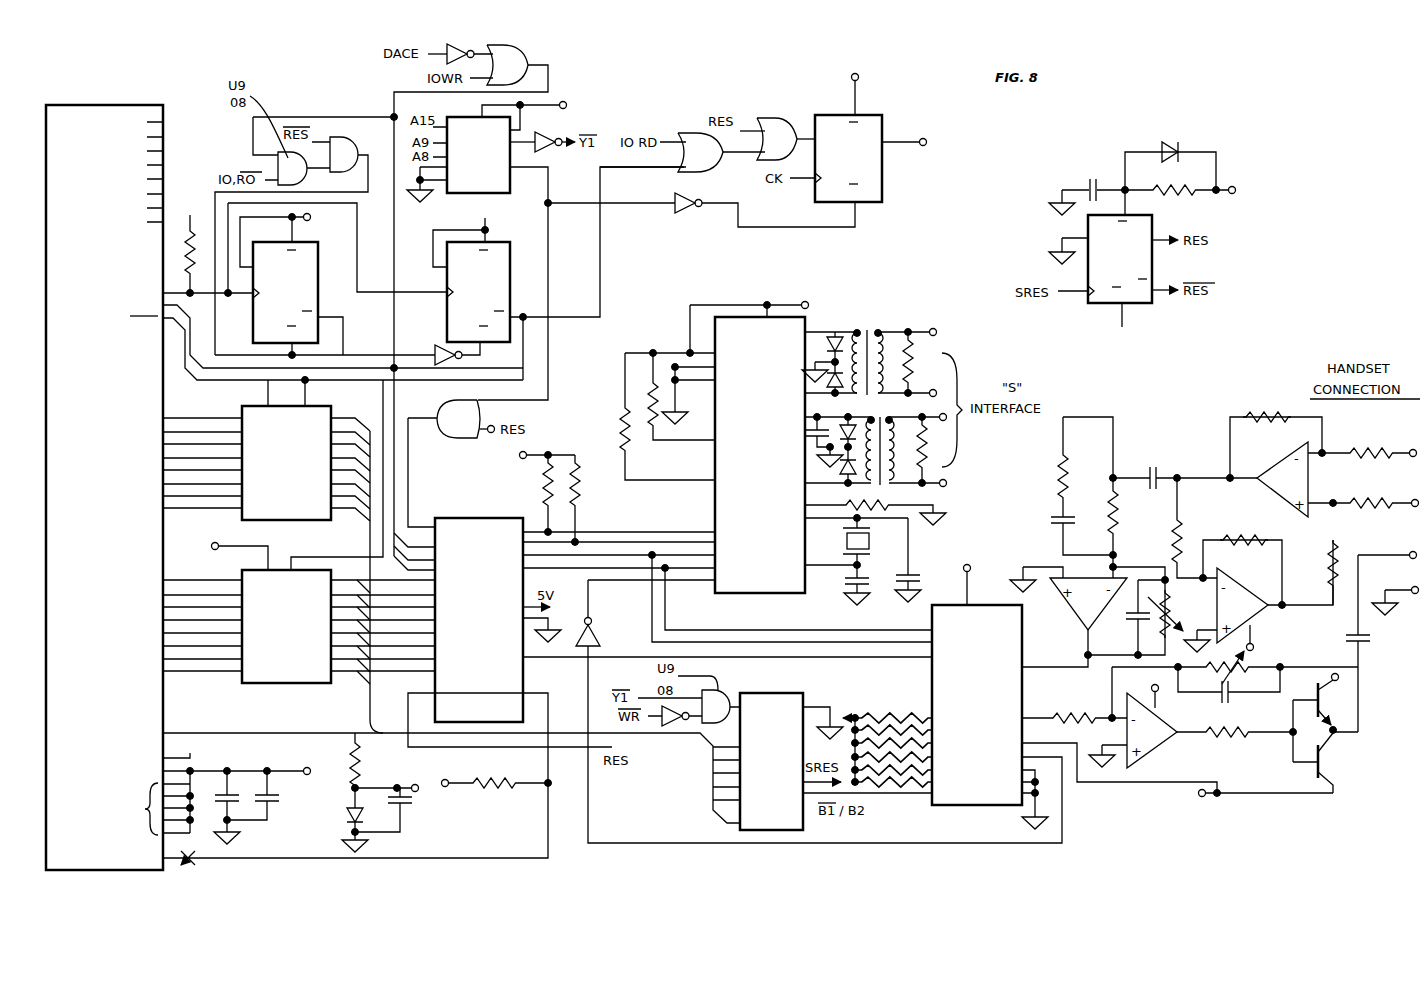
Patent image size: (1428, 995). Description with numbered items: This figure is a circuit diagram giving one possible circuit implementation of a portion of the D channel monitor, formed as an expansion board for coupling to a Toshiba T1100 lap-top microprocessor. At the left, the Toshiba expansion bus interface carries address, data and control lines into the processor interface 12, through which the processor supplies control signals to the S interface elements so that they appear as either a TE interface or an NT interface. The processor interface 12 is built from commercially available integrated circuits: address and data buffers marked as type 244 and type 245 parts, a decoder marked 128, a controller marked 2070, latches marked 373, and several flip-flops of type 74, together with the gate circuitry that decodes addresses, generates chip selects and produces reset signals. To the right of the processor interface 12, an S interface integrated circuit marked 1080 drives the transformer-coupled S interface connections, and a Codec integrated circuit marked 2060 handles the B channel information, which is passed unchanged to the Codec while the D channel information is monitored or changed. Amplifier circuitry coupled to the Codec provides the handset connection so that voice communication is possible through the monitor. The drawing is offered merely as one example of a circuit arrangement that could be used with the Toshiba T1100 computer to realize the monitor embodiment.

The processor interface 12 is at (815, 862).
The 74 flip-flop 74 is at (702, 229).
The U7 128 decoder 128 is at (478, 155).
The U4 244 buffer 244 is at (286, 463).
The U5 245 transceiver 245 is at (286, 626).
The U1 2070 is at (479, 620).
The U2 1080 S interface chip 1080 is at (760, 455).
The U3 2060 codec 2060 is at (977, 705).
The U12 373 latch 373 is at (771, 761).